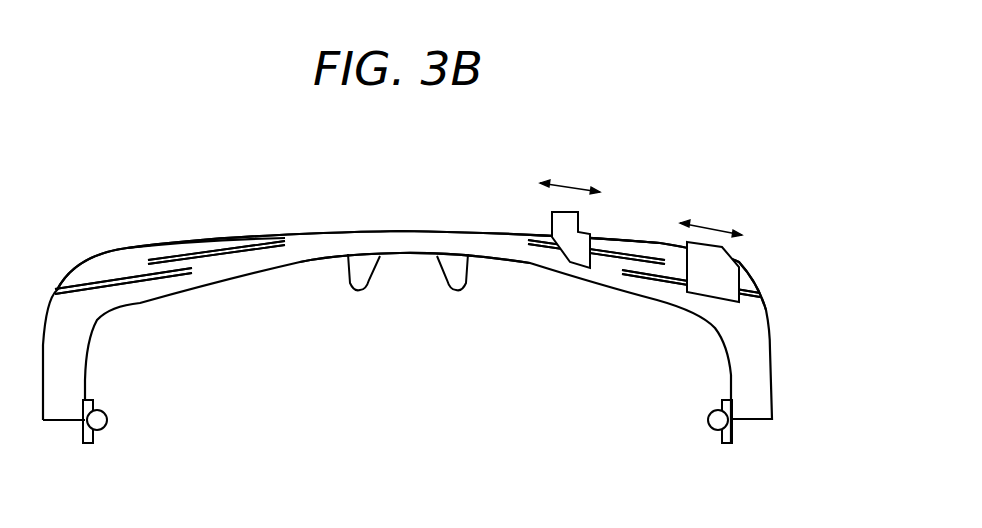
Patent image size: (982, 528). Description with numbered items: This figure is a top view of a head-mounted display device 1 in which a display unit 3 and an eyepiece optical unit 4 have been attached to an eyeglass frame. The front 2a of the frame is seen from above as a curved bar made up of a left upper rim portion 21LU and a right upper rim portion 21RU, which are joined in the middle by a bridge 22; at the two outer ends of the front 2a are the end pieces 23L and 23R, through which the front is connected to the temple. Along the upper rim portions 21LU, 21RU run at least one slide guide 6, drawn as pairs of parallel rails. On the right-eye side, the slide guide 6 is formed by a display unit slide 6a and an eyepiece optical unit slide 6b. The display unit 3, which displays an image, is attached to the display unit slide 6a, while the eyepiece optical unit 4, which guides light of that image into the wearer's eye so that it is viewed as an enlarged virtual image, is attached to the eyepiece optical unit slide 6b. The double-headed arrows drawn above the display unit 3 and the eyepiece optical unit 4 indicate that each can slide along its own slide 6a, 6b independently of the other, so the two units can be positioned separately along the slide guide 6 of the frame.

The head-mounted display device 1 is at (187, 171).
The front 2a is at (317, 231).
The bridge 22 is at (408, 241).
The upper rim portion 21LU is at (130, 262).
The upper rim portion 21RU is at (672, 257).
The slide guide 6 is at (407, 268).
The display unit slide 6a is at (130, 283).
The eyepiece optical unit slide 6b is at (238, 255).
The eyepiece optical unit 4 is at (560, 225).
The display unit 3 is at (717, 268).
The end piece 23L is at (93, 437).
The end piece 23R is at (718, 433).